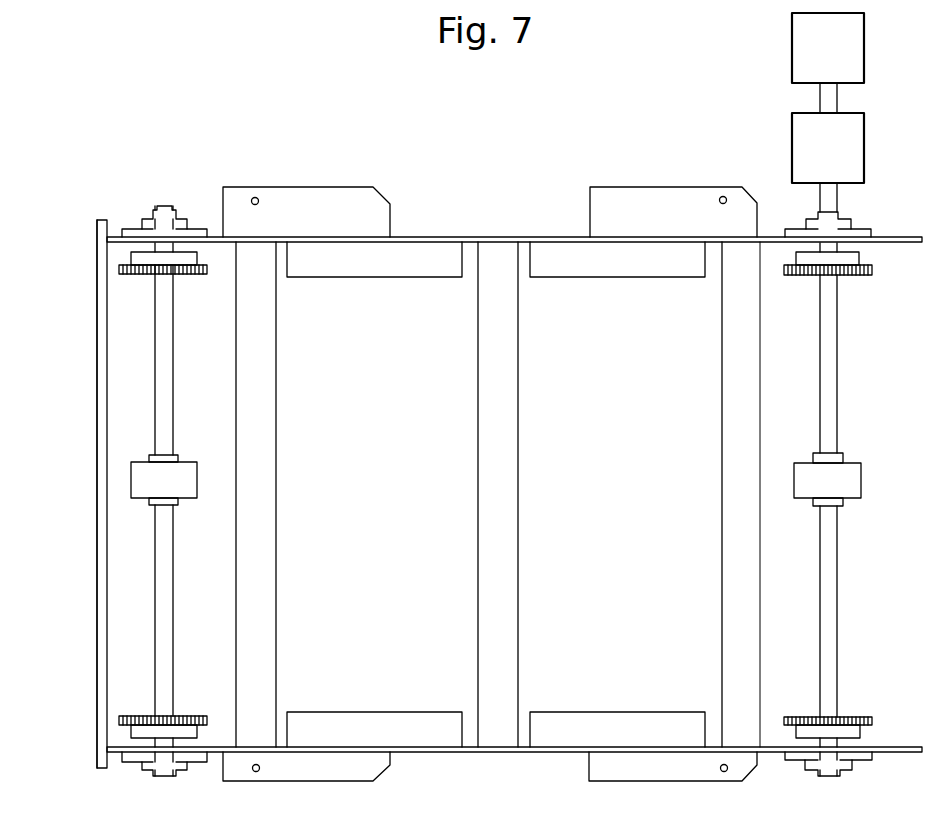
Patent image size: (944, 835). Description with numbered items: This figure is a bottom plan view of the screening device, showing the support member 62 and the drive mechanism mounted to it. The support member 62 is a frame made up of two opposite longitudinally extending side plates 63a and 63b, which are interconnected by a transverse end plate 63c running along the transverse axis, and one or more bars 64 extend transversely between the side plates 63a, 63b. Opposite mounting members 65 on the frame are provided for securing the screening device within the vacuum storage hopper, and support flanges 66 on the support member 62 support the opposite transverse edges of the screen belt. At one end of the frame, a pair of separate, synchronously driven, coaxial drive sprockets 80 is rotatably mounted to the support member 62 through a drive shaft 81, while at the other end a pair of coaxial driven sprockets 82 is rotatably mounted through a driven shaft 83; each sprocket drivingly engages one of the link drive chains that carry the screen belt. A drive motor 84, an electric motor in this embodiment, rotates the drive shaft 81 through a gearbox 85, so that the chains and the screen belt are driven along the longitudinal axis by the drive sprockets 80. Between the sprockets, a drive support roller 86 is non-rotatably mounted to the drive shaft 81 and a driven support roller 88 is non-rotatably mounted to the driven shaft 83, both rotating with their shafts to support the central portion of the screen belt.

The support member 62 is at (88, 575).
The side plate 63a is at (904, 237).
The side plate 63b is at (903, 753).
The transverse end plate 63c is at (97, 665).
The bars 64 is at (268, 482).
The mounting members 65 is at (317, 195).
The support flanges 66 is at (367, 270).
The drive sprockets 80 is at (860, 275).
The drive shaft 81 is at (833, 582).
The driven sprockets 82 is at (195, 274).
The driven shaft 83 is at (163, 387).
The drive motor 84 is at (864, 46).
The gearbox 85 is at (864, 148).
The drive support roller 86 is at (859, 480).
The driven support roller 88 is at (150, 484).